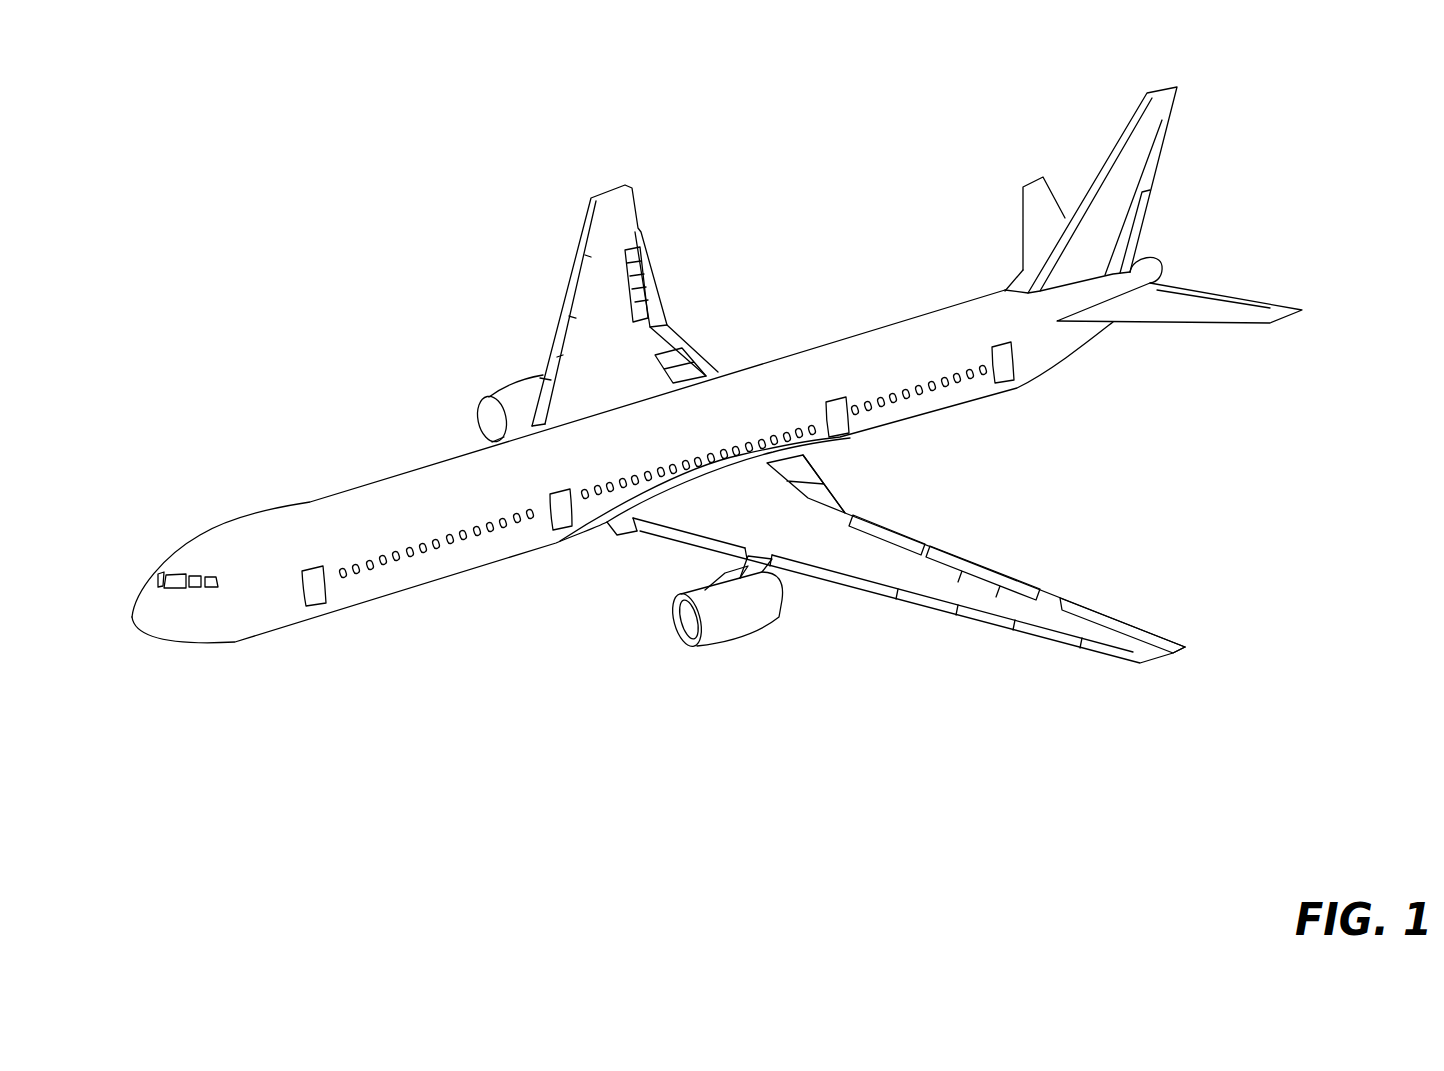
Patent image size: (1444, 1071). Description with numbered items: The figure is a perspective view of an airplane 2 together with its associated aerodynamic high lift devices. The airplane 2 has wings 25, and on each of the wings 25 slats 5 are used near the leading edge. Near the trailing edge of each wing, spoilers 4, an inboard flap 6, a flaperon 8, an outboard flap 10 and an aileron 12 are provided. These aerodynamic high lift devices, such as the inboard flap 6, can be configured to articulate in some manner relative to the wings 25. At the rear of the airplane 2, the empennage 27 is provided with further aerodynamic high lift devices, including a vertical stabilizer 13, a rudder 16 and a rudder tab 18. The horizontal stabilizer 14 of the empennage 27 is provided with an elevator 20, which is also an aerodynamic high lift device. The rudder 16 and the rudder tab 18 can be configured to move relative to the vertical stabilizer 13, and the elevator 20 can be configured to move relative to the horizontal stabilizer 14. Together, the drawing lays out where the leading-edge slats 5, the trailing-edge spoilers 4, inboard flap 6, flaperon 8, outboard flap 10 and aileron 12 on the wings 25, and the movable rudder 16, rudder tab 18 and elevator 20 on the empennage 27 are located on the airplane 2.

The airplane 2 is at (226, 103).
The spoilers 4 is at (613, 273).
The slats 5 is at (540, 347).
The inboard (IB) flap 6 is at (837, 476).
The flaperon 8 is at (868, 503).
The outboard (OB) flap 10 is at (993, 553).
The aileron 12 is at (1124, 610).
The vertical stabilizer 13 is at (1204, 190).
The horizontal stabilizer 14 is at (1181, 313).
The rudder 16 is at (1172, 156).
The rudder tab 18 is at (1160, 226).
The elevator 20 is at (1196, 279).
The wings 25 is at (872, 424).
The empennage 27 is at (1012, 156).